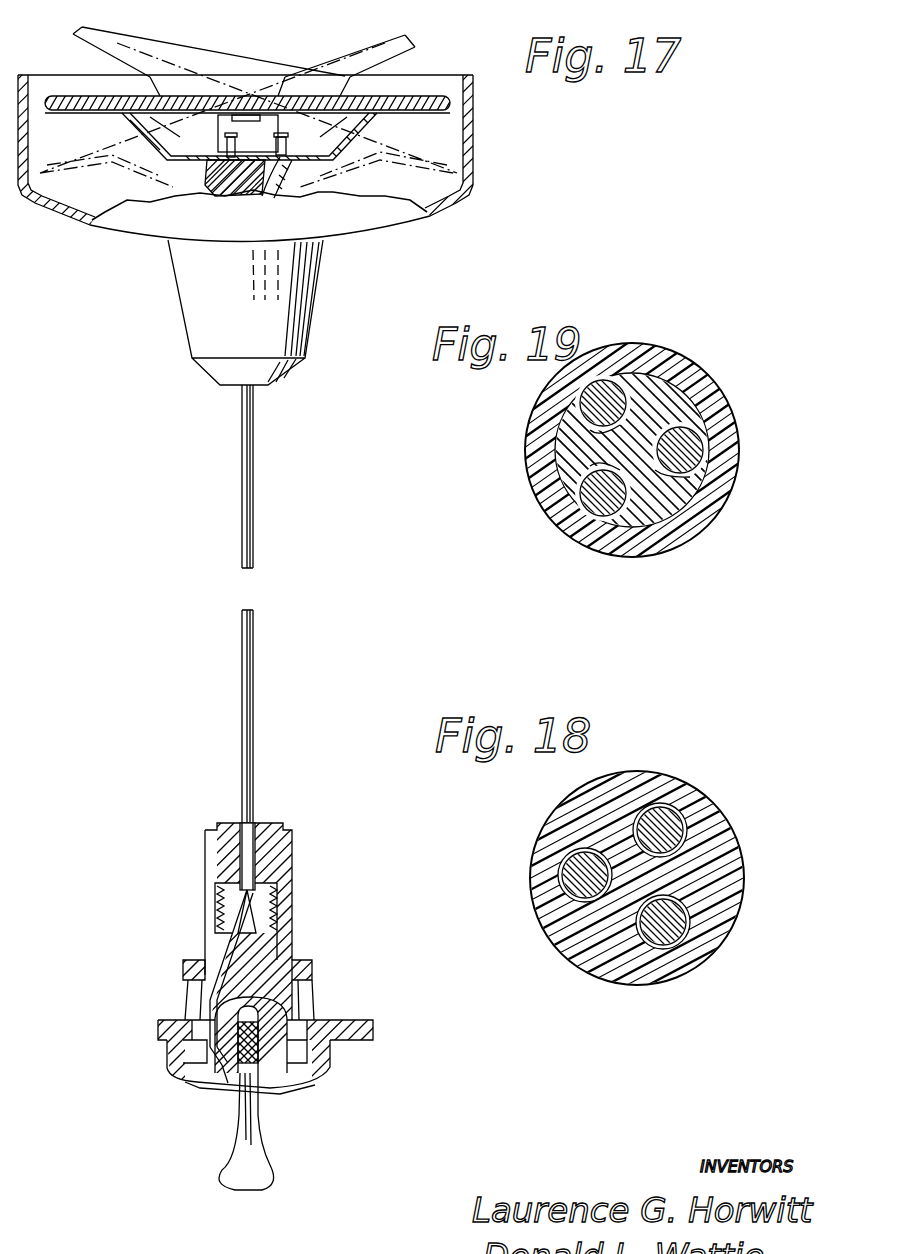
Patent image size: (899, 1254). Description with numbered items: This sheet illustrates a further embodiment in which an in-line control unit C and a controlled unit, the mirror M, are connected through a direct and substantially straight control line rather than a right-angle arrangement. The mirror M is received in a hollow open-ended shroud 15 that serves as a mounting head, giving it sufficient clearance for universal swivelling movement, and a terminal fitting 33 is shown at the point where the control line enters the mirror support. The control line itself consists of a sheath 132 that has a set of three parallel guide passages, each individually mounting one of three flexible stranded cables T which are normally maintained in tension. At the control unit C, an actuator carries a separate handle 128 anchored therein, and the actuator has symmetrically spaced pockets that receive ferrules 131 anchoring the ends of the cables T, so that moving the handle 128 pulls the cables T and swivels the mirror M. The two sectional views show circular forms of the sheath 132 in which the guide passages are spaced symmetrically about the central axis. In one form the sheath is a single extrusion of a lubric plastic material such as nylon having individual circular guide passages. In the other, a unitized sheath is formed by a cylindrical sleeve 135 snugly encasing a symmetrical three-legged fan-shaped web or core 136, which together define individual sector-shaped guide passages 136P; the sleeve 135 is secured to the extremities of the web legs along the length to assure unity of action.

In FIG. 17, the shroud 15 is at (471, 162).
In FIG. 17, the terminal block 33 is at (290, 143).
In FIG. 17, the mirror M is at (470, 207).
In FIG. 17, the sheath 132 is at (253, 550).
In FIG. 19, the sheath 132 is at (719, 374).
In FIG. 18, the sheath 132 is at (748, 833).
In FIG. 17, the cables T is at (227, 947).
In FIG. 19, the cables T is at (607, 390).
In FIG. 18, the cables T is at (670, 823).
In FIG. 17, the control unit C is at (333, 994).
In FIG. 17, the ferrules 131 is at (227, 1085).
In FIG. 17, the handle 128 is at (270, 1163).
In FIG. 19, the cylindrical sleeve 135 is at (563, 517).
In FIG. 19, the web or core 136 is at (603, 462).
In FIG. 19, the guide passages 136P is at (695, 477).